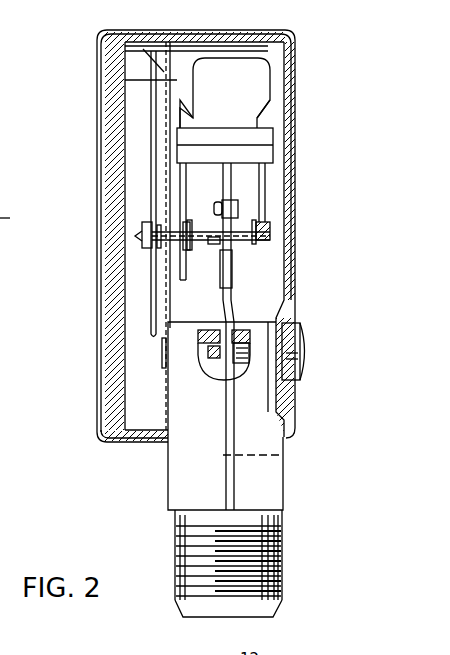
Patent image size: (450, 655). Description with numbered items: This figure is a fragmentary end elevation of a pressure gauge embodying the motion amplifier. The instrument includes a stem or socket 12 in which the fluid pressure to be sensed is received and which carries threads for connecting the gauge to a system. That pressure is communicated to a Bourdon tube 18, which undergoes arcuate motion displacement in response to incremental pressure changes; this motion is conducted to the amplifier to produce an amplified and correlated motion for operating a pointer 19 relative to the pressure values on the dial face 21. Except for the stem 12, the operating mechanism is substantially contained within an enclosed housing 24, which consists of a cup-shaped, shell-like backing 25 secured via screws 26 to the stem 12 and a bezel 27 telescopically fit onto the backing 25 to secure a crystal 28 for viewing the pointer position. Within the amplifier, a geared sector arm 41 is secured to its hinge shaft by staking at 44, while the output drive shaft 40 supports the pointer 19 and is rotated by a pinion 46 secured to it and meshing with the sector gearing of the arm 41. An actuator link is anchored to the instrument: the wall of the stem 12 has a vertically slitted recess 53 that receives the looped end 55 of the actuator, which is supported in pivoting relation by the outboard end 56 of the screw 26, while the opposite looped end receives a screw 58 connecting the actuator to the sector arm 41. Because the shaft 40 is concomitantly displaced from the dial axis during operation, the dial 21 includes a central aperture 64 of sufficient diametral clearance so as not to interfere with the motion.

The stem or socket 12 is at (272, 492).
The Bourdon tube 18 is at (236, 91).
The pointer 19 is at (151, 124).
The dial face 21 is at (145, 43).
The enclosed housing 24 is at (283, 25).
The backing 25 is at (295, 58).
The screw 26 is at (306, 353).
The bezel 27 is at (137, 443).
The crystal 28 is at (114, 357).
The output drive shaft 40 is at (178, 240).
The geared sector arm 41 is at (226, 190).
The staking 44 is at (271, 226).
The pinion 46 is at (212, 248).
The vertically slitted recess 53 is at (284, 457).
The looped end 55 is at (229, 362).
The outboard end 56 is at (209, 352).
The screw 58 is at (242, 211).
The central aperture 64 is at (182, 228).